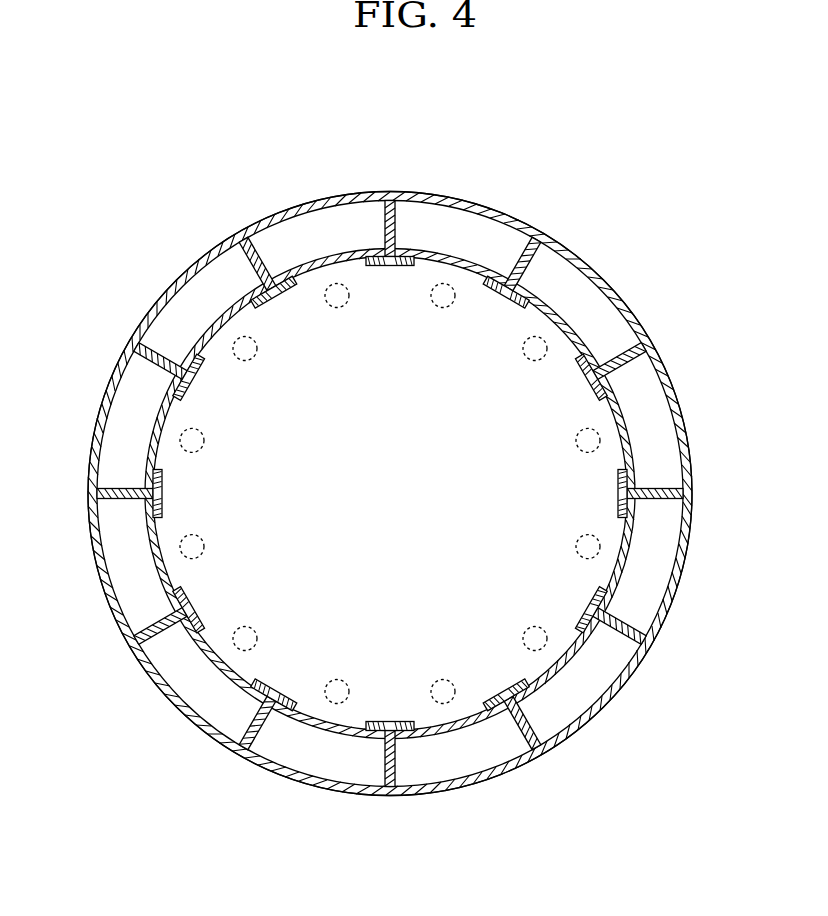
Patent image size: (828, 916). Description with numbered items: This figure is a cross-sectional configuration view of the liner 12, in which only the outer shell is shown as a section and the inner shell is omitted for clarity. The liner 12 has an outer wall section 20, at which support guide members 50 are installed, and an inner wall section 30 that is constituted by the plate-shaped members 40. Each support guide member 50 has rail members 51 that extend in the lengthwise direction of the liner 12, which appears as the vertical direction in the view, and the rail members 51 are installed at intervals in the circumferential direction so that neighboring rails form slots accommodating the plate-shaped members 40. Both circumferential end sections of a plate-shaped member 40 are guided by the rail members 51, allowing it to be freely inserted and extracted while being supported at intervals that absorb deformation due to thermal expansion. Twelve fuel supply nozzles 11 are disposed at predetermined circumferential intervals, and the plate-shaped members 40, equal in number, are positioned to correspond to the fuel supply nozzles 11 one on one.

The liner 12 is at (128, 303).
The outer wall section 20 is at (183, 270).
The inner wall section 30 is at (212, 338).
The plate-shaped member 40 is at (330, 253).
The support guide member 50 is at (383, 269).
The rail member 51 is at (278, 292).
The fuel supply nozzle 11 is at (330, 305).